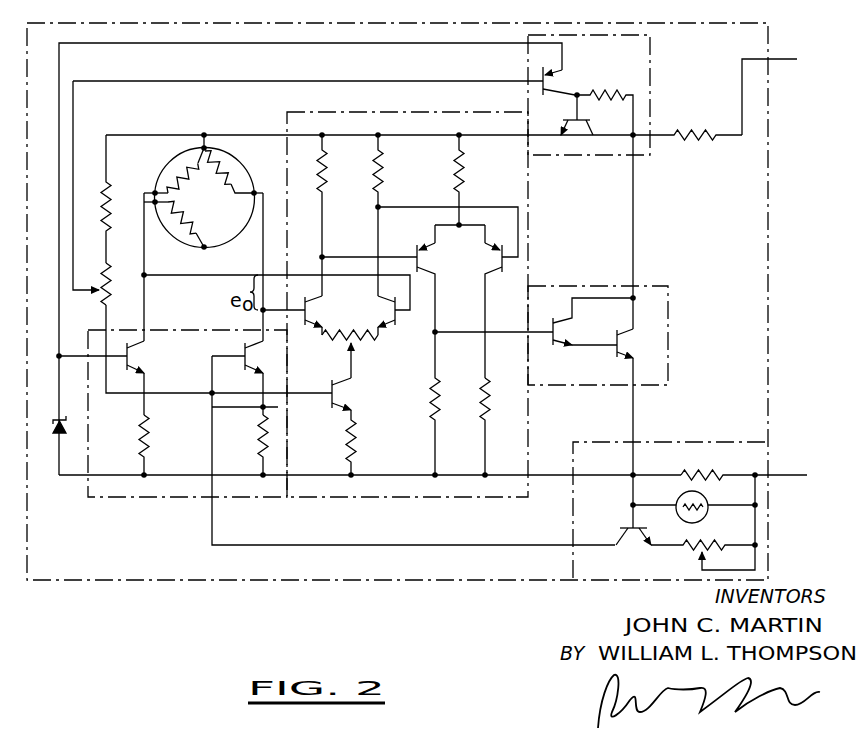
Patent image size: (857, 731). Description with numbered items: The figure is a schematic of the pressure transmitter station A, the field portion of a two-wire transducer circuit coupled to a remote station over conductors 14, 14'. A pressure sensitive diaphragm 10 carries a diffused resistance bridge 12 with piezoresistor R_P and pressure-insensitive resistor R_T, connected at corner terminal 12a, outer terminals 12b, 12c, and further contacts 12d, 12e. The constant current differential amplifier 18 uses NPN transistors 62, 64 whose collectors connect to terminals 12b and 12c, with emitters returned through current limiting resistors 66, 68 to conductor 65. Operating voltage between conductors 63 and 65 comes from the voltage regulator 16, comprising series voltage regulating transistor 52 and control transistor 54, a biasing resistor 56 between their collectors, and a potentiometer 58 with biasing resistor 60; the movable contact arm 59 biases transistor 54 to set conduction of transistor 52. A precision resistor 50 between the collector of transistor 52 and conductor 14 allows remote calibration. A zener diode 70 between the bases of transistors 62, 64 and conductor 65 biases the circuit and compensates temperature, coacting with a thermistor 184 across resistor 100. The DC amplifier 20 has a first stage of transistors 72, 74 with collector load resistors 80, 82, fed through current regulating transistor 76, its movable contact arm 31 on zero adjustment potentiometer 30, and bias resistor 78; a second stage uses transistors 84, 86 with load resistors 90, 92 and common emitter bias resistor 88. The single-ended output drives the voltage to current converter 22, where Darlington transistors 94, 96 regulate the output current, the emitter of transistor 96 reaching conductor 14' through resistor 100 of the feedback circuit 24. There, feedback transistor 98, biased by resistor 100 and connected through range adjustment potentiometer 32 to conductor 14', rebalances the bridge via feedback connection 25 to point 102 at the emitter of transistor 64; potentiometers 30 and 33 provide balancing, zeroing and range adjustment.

The pressure transmitter station A is at (772, 42).
The diaphragm 10 is at (238, 159).
The resistance bridge 12 is at (202, 148).
The corner terminal 12a is at (205, 135).
The outer terminal 12b is at (155, 192).
The outer terminal 12c is at (268, 188).
The bridge terminal 12d is at (155, 203).
The bridge terminal 12e is at (206, 249).
The conductor 14 is at (783, 97).
The conductor 14' is at (794, 454).
The voltage regulator 16 is at (652, 42).
The constant current differential amplifier 18 is at (163, 328).
The DC amplifier 20 is at (285, 112).
The voltage to current converter 22 is at (670, 291).
The feedback circuit 24 is at (688, 440).
The feedback connection 25 is at (212, 538).
The zero adjustment potentiometer 30 is at (362, 342).
The movable contact arm 31 is at (349, 368).
The range adjustment potentiometer 32 is at (683, 548).
The potentiometer 33 is at (755, 556).
The precision resistor 50 is at (698, 140).
The series voltage regulating transistor 52 is at (567, 118).
The control transistor 54 is at (560, 78).
The biasing resistor 56 is at (608, 93).
The potentiometer 58 is at (98, 303).
The movable contact arm 59 is at (82, 288).
The biasing resistor 60 is at (100, 188).
The NPN transistor 62 is at (142, 370).
The conductor 63 is at (127, 133).
The NPN transistor 64 is at (243, 348).
The conductor 65 is at (78, 478).
The current limiting resistor 66 is at (150, 430).
The current limiting resistor 68 is at (258, 433).
The zener diode 70 is at (50, 430).
The transistor 72 is at (312, 316).
The transistor 74 is at (396, 322).
The current regulating transistor 76 is at (350, 408).
The bias resistor 78 is at (345, 432).
The collector load resistor 80 is at (326, 168).
The collector load resistor 82 is at (382, 175).
The transistor 84 is at (432, 258).
The transistor 86 is at (488, 256).
The common emitter bias resistor 88 is at (463, 175).
The collector load resistor 90 is at (432, 402).
The collector load resistor 92 is at (485, 402).
The transistor 94 is at (558, 345).
The transistor 96 is at (620, 343).
The feedback transistor 98 is at (628, 526).
The resistor 100 is at (708, 470).
The point 102 is at (278, 407).
The thermistor 184 is at (708, 514).